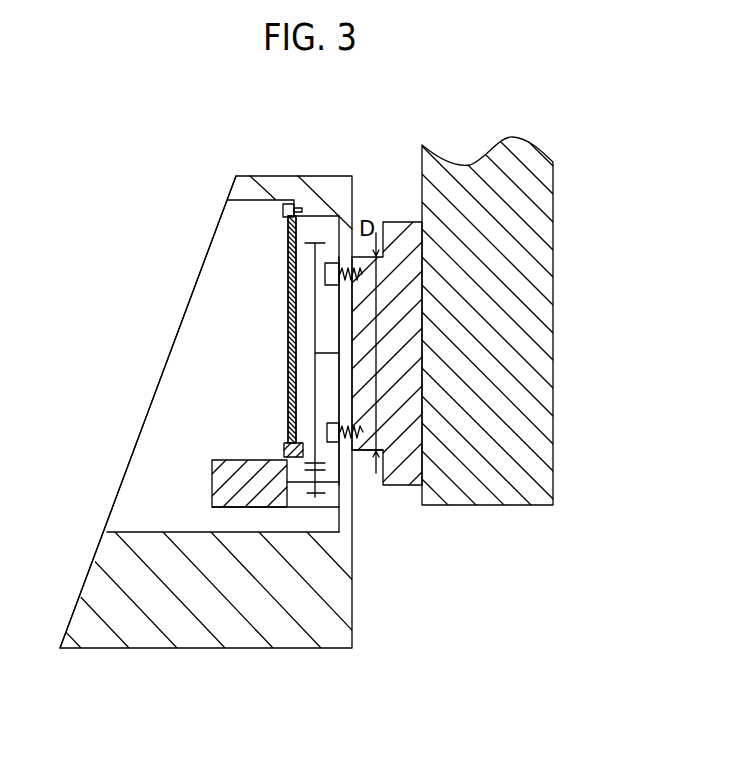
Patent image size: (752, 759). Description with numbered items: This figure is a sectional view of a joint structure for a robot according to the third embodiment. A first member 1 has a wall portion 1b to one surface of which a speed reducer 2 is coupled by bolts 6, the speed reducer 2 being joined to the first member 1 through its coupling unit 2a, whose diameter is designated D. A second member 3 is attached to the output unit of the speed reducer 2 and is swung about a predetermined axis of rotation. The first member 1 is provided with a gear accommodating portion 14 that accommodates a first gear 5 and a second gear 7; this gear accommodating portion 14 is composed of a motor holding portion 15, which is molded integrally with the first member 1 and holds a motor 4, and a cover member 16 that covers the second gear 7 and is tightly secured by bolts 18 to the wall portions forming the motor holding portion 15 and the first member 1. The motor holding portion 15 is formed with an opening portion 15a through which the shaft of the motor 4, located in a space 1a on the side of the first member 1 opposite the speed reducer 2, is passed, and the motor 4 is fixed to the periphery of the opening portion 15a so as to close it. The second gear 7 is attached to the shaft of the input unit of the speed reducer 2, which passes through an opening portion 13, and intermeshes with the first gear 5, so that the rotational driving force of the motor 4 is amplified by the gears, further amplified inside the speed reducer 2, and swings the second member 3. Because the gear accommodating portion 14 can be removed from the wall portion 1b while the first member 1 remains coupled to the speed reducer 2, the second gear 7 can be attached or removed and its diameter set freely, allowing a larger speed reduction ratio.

The first member 1 is at (162, 602).
The space 1a is at (157, 447).
The wall portion 1b is at (345, 502).
The speed reducer 2 is at (417, 183).
The coupling unit 2a is at (357, 451).
The second member 3 is at (497, 395).
The motor 4 is at (243, 460).
The first gear 5 is at (333, 477).
The bolts 6 is at (330, 265).
The second gear 7 is at (313, 268).
The opening portion 13 is at (347, 330).
The gear accommodating portion 14 is at (222, 465).
The motor holding portion 15 is at (285, 457).
The opening portion 15a is at (297, 503).
The cover member 16 is at (288, 377).
The bolts 18 is at (283, 212).